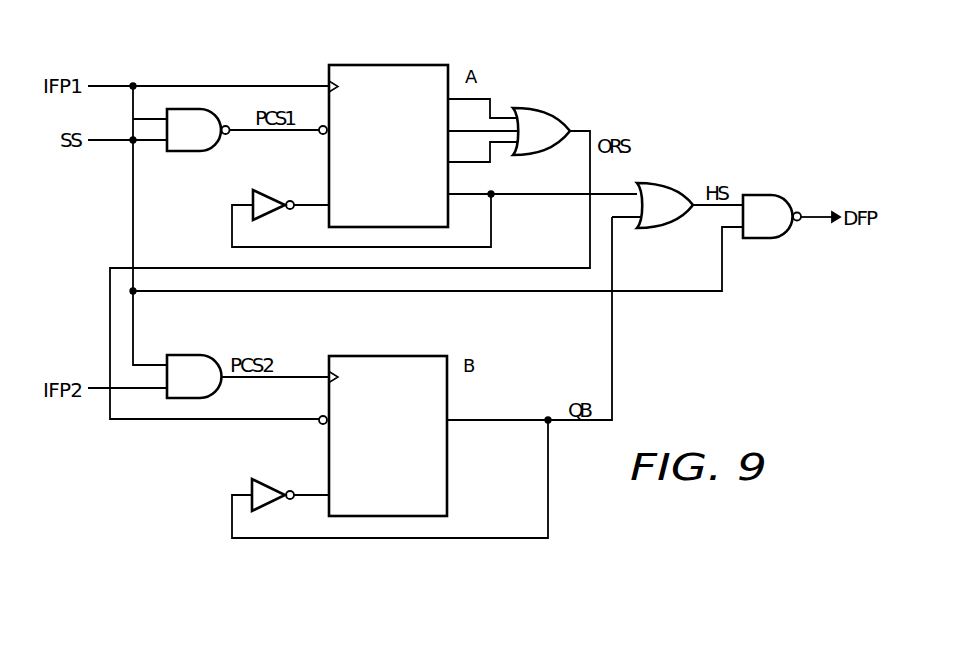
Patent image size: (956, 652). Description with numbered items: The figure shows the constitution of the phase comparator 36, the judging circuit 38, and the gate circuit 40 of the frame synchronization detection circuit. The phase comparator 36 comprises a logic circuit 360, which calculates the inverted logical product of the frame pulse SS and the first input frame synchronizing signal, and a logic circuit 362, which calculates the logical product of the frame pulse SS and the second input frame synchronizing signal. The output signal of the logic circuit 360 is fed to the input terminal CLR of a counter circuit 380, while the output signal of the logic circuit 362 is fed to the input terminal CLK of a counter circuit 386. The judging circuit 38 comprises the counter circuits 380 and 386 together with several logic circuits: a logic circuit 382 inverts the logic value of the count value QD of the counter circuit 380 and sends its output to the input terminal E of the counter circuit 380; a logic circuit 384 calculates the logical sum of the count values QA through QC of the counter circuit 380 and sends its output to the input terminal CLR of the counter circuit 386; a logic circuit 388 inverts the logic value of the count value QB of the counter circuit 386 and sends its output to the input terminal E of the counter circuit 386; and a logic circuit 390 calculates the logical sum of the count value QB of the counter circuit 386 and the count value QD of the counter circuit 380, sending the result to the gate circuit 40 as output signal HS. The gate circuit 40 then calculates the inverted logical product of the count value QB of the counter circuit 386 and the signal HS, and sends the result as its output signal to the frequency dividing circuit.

The counter circuit 380 is at (387, 63).
The logic circuit 382 is at (278, 190).
The logic circuit 384 is at (547, 108).
The logic circuit 390 is at (672, 182).
The gate circuit 40 is at (765, 238).
The logic circuit 360 is at (193, 153).
The logic circuit 362 is at (193, 355).
The logic circuit 388 is at (270, 482).
The counter circuit 386 is at (447, 497).
The phase comparator 36 is at (201, 524).
The judging circuit 38 is at (422, 554).